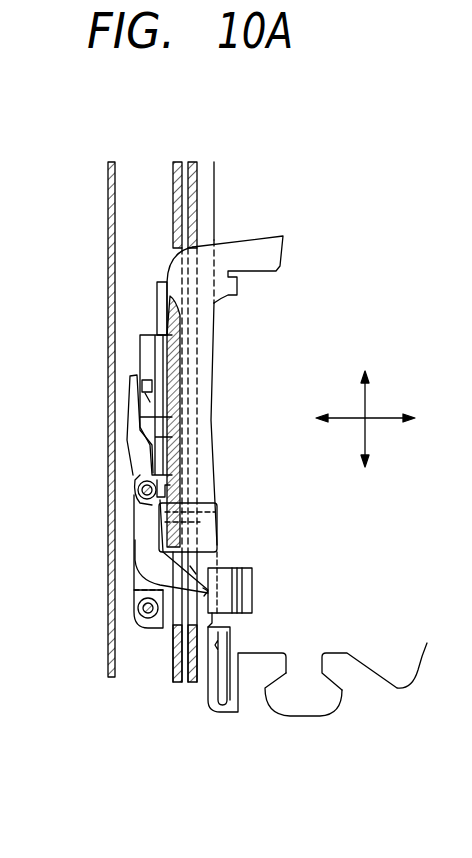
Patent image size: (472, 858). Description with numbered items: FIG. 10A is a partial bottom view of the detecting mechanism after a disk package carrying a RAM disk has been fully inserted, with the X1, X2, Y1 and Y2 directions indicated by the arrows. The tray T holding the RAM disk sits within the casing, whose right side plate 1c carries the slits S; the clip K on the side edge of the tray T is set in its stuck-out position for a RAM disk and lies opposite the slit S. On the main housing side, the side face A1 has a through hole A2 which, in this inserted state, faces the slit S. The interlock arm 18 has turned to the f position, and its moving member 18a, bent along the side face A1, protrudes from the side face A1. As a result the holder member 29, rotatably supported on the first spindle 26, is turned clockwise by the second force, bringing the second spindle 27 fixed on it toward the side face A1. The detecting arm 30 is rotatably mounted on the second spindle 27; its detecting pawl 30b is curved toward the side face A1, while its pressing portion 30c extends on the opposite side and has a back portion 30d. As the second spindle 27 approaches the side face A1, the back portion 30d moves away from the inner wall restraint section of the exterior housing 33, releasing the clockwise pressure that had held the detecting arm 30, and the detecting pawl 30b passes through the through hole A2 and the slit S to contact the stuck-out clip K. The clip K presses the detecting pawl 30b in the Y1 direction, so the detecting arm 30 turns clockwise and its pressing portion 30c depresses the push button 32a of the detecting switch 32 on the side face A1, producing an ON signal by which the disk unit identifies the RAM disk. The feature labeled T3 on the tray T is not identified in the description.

The side face A1 is at (172, 185).
The through hole A2 is at (170, 632).
The right side plate 1c is at (215, 196).
The f position f is at (262, 273).
The interlock arm 18 is at (225, 298).
The moving member 18a is at (217, 515).
The detecting switch 32 is at (138, 352).
The push button 32a is at (137, 385).
The detecting arm 30 is at (133, 472).
The detecting pawl 30b is at (205, 591).
The pressing portion 30c is at (140, 388).
The back portion 30d is at (127, 442).
The second spindle 27 is at (137, 494).
The holder member 29 is at (138, 577).
The first spindle 26 is at (138, 608).
The slit S is at (193, 570).
The clip K is at (227, 598).
The exterior housing 33 is at (102, 668).
The tray T is at (383, 667).
The tray recess T3 is at (303, 707).
The X1 direction X1 is at (364, 407).
The X2 direction X2 is at (364, 476).
The Y1 direction Y1 is at (350, 423).
The Y2 direction Y2 is at (423, 423).